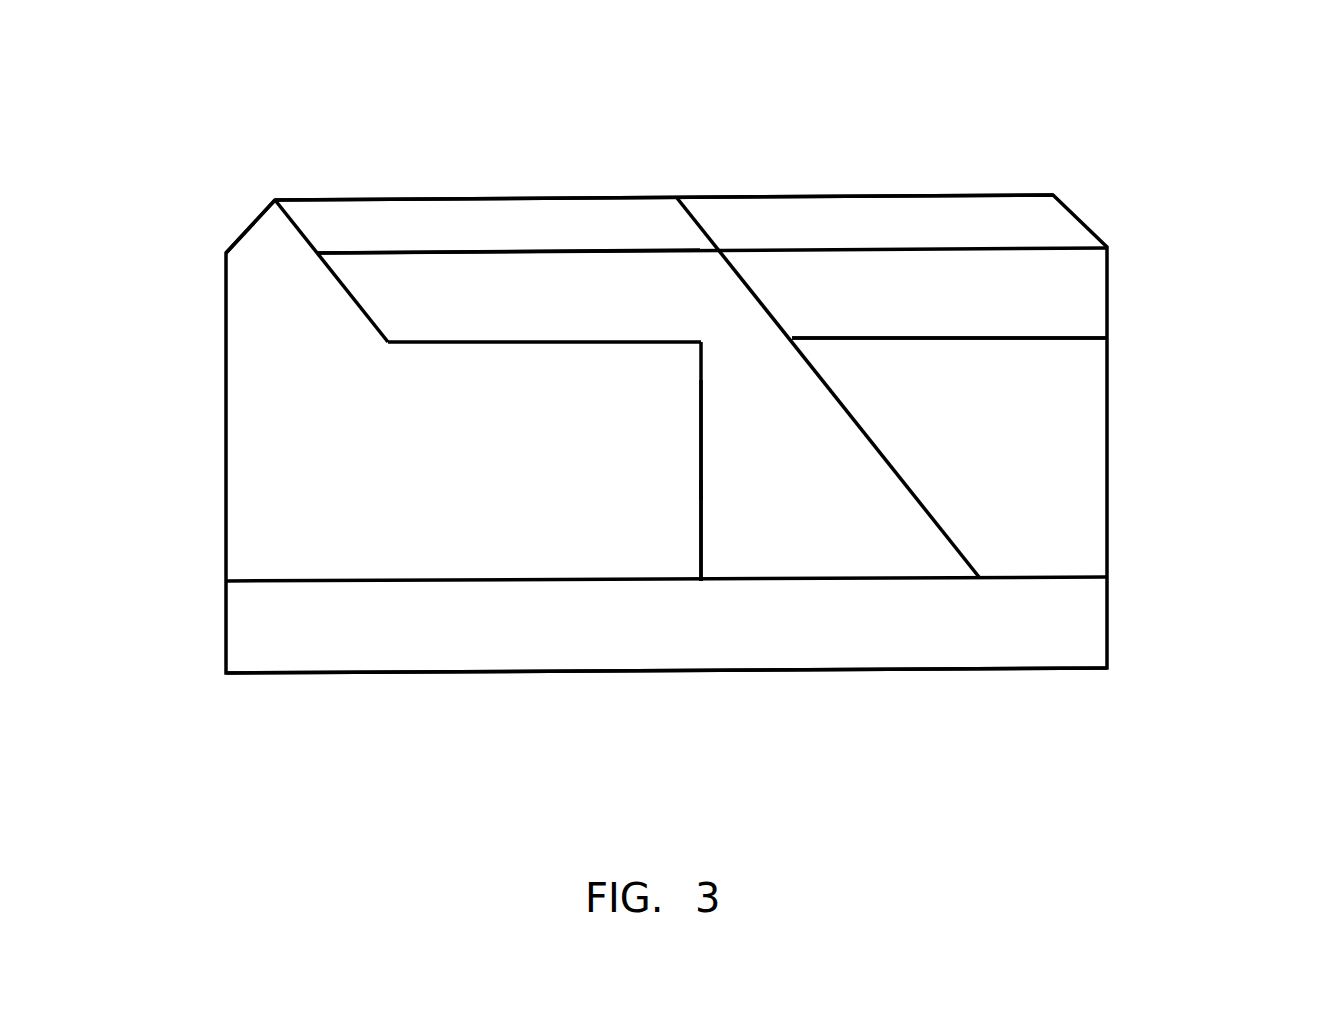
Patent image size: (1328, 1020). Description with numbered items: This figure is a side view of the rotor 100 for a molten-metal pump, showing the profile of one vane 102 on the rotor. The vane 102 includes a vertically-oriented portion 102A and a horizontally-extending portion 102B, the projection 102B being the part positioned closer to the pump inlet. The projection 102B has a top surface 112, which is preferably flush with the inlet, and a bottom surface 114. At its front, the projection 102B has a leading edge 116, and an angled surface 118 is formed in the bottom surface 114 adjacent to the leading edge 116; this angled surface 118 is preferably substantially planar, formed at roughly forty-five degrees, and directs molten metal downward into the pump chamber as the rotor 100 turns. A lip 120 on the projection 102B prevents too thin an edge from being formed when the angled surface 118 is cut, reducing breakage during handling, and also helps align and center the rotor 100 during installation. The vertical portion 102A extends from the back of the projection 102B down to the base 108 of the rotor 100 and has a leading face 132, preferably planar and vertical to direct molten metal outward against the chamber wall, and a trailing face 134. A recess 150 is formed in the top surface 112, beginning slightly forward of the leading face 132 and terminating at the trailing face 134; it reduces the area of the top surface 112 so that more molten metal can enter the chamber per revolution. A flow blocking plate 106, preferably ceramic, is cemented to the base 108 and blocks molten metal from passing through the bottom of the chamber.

The rotor 100 is at (1176, 83).
The vane 102 is at (568, 423).
The vertically-oriented portion 102A is at (701, 441).
The horizontally-extending portion 102B is at (535, 288).
The flow blocking plate 106 is at (1071, 602).
The base 108 is at (870, 578).
The top surface 112 is at (450, 198).
The bottom surface 114 is at (465, 343).
The leading edge 116 is at (275, 200).
The angled surface 118 is at (332, 275).
The lip 120 is at (340, 225).
The leading face 132 is at (701, 527).
The trailing face 134 is at (955, 540).
The recess 150 is at (1019, 430).